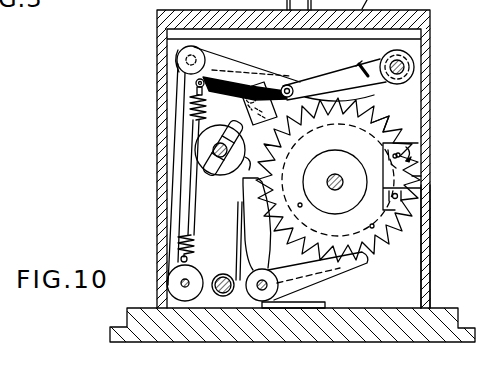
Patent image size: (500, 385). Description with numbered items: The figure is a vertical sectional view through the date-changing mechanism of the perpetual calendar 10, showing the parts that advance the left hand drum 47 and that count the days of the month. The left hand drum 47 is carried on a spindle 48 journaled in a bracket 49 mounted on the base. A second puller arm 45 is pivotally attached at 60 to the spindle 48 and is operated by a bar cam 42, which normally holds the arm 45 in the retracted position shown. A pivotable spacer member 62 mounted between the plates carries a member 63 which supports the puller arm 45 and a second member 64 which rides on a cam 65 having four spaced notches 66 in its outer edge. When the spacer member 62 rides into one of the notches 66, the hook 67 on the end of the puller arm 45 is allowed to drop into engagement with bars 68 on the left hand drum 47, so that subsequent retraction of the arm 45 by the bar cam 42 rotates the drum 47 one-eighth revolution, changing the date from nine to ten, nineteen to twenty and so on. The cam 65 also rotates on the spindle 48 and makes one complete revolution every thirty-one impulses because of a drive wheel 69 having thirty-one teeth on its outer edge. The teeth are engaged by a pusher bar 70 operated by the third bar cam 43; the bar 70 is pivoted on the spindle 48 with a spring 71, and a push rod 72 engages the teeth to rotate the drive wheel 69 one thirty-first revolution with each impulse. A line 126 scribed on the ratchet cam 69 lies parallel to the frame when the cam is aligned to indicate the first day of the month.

The perpetual calendar 10 is at (157, 60).
The bar cam 42 is at (238, 237).
The third bar cam 43 is at (205, 173).
The second puller arm 45 is at (250, 56).
The left hand drum 47 is at (386, 212).
The spindle 48 is at (343, 178).
The bracket 49 is at (388, 291).
The pivotal attachment 60 is at (181, 283).
The pivotable spacer member 62 is at (344, 79).
The member 63 is at (290, 85).
The second member 64 is at (301, 155).
The cam 65 is at (431, 124).
The notches 66 is at (290, 170).
The hook 67 is at (373, 99).
The bars 68 is at (382, 113).
The drive wheel 69 is at (428, 177).
The pusher bar 70 is at (222, 110).
The spring 71 is at (186, 212).
The push rod 72 is at (258, 110).
The line 126 is at (460, 240).